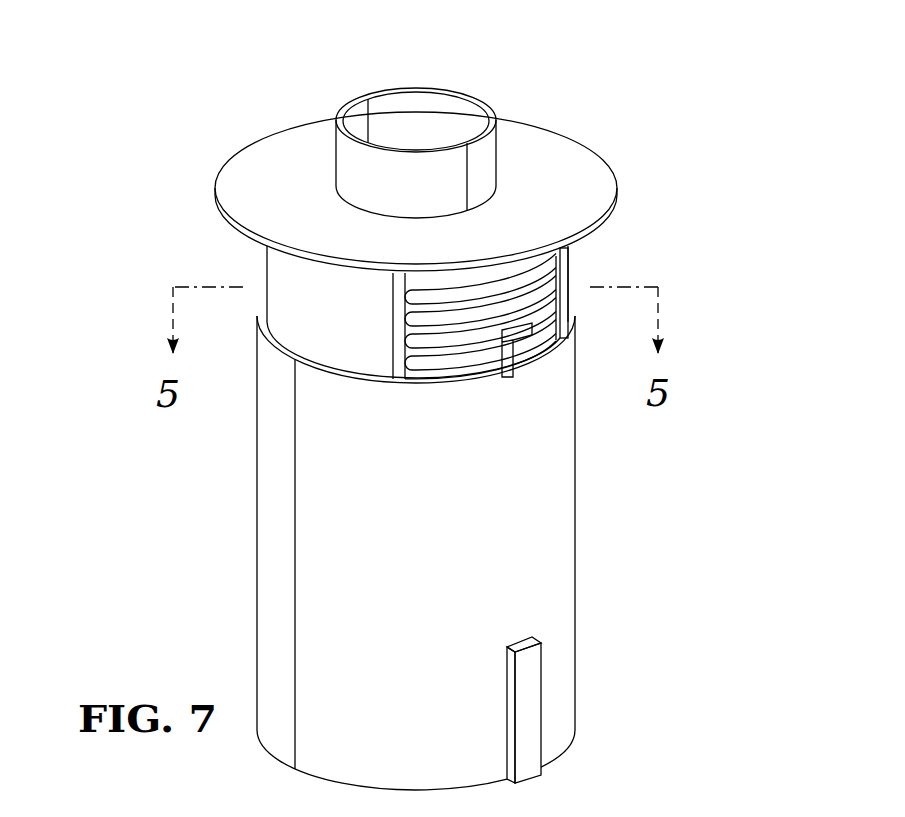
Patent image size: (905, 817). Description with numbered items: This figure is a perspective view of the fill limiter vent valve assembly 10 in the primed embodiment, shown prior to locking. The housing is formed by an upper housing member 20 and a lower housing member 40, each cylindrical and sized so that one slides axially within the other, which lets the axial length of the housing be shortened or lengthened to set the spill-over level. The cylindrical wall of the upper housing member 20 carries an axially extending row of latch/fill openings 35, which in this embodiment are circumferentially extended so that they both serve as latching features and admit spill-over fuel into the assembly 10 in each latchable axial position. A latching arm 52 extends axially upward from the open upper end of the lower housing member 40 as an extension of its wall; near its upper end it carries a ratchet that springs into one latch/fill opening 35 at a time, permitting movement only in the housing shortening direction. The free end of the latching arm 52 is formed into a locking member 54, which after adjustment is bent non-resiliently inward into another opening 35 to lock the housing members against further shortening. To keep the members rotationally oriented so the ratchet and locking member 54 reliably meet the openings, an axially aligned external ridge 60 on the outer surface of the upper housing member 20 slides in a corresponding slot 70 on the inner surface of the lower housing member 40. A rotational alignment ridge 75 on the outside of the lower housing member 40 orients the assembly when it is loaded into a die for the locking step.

The FLVV assembly 10 is at (608, 106).
The upper housing member 20 is at (233, 146).
The latch/fill openings 35 is at (552, 252).
The lower housing member 40 is at (256, 505).
The latching arm 52 is at (517, 352).
The locking member 54 is at (560, 283).
The external ridge 60 is at (400, 330).
The slot 70 is at (397, 375).
The rotational alignment ridge 75 is at (527, 697).